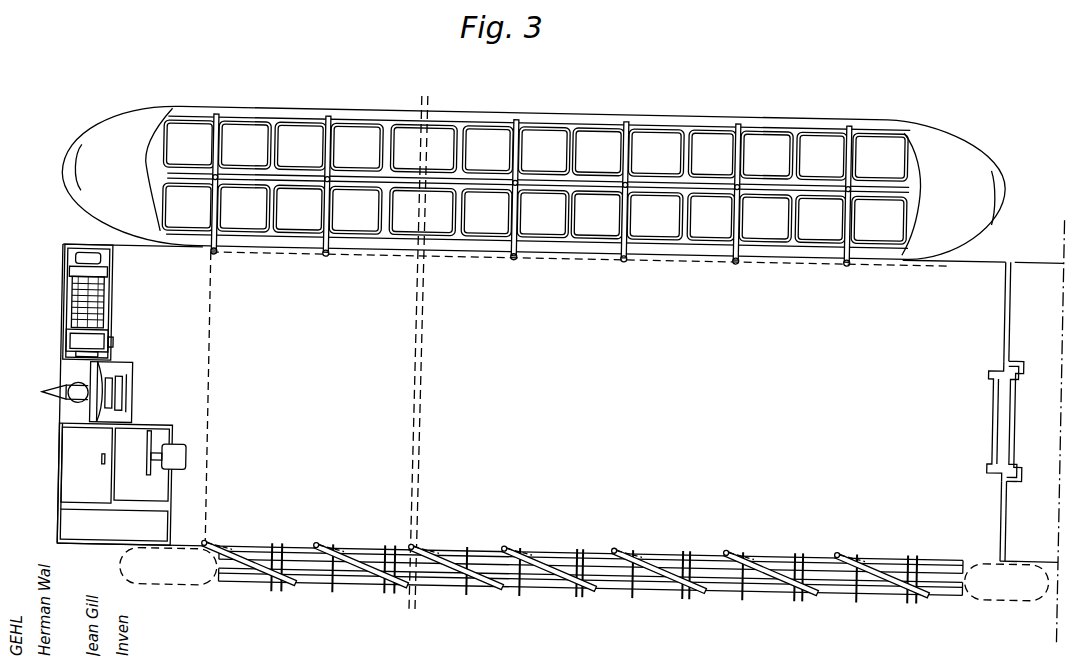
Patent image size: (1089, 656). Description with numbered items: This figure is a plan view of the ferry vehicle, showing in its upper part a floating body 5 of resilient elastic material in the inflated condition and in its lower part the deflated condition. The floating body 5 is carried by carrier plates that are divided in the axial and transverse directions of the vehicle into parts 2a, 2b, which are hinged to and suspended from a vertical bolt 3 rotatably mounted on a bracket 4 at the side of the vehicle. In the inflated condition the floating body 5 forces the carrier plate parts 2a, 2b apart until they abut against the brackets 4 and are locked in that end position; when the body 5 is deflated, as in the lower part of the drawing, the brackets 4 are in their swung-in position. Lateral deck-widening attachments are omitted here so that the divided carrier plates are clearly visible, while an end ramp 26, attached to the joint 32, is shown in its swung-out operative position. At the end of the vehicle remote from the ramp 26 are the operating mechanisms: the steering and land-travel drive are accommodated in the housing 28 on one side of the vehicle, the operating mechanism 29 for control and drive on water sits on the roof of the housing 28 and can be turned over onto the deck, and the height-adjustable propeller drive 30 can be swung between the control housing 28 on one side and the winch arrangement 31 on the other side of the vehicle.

The carrier plate part 2a is at (550, 142).
The carrier plate part 2b is at (589, 197).
The vertical bolt 3 is at (326, 177).
The bracket 4 is at (510, 153).
The floating body 5 is at (299, 117).
The end ramp 26 is at (1025, 265).
The housing 28 is at (102, 498).
The operating mechanism 29 is at (176, 460).
The propeller drive 30 is at (85, 399).
The winch arrangement 31 is at (87, 278).
The joint 32 is at (1003, 401).